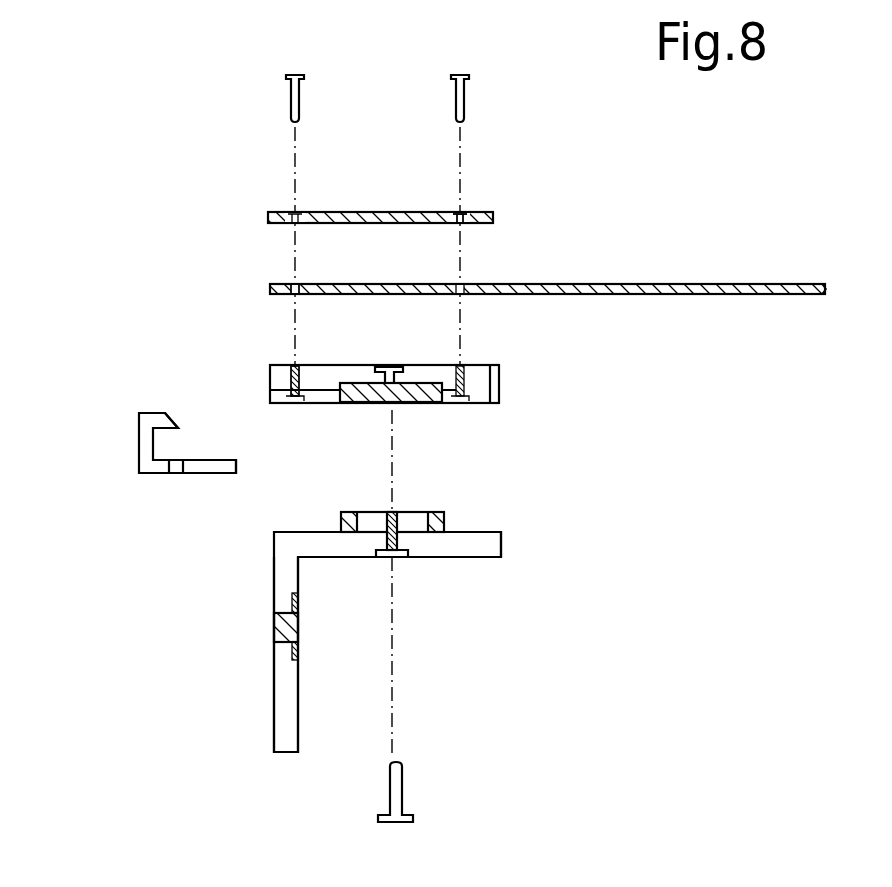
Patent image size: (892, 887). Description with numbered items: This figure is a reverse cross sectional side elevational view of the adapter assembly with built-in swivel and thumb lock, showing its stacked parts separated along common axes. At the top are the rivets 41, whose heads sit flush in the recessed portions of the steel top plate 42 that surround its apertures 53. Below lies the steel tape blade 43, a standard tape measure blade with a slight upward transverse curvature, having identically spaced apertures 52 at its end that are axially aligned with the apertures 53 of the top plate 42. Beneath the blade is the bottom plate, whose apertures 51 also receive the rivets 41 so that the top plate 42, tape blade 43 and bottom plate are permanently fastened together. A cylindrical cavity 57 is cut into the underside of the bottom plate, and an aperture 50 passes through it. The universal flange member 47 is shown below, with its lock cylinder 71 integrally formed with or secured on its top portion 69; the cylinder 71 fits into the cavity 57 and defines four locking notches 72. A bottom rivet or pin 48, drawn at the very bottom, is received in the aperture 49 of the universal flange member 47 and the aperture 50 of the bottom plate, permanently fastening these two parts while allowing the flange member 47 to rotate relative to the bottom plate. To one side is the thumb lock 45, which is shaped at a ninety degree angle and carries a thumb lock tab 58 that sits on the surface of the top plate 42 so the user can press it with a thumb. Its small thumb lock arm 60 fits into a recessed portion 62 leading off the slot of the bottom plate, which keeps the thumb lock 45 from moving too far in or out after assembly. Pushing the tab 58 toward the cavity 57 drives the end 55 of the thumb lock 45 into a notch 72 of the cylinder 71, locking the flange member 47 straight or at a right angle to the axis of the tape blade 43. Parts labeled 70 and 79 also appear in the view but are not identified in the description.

The rivets 41 is at (465, 97).
The top plate 42 is at (493, 215).
The steel tape blade 43 is at (679, 292).
The thumb lock 45 is at (140, 457).
The universal flange member 47 is at (501, 545).
The bottom rivet or pin 48 is at (397, 792).
The aperture of universal flange member 49 is at (400, 538).
The aperture of bottom plate 50 is at (392, 366).
The apertures of bottom plate 51 is at (270, 368).
The apertures of steel tape blade 52 is at (290, 285).
The apertures of top plate 53 is at (465, 213).
The end of thumb lock 55 is at (238, 466).
The cylindrical cavity 57 is at (432, 401).
The thumb lock tab 58 is at (142, 415).
The thumb lock arm 60 is at (180, 459).
The recessed portion 62 is at (270, 393).
The top portion of universal flange member 69 is at (470, 532).
The vertical leg 70 is at (274, 590).
The lock cylinder 71 is at (420, 520).
The locking notches 72 is at (341, 520).
The threaded insert 79 is at (276, 634).